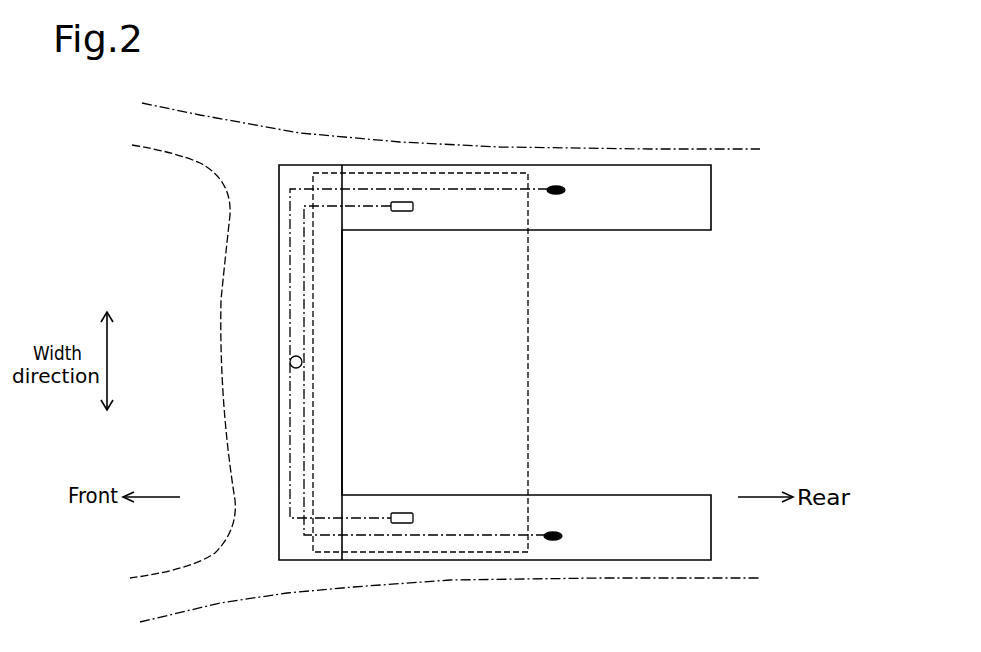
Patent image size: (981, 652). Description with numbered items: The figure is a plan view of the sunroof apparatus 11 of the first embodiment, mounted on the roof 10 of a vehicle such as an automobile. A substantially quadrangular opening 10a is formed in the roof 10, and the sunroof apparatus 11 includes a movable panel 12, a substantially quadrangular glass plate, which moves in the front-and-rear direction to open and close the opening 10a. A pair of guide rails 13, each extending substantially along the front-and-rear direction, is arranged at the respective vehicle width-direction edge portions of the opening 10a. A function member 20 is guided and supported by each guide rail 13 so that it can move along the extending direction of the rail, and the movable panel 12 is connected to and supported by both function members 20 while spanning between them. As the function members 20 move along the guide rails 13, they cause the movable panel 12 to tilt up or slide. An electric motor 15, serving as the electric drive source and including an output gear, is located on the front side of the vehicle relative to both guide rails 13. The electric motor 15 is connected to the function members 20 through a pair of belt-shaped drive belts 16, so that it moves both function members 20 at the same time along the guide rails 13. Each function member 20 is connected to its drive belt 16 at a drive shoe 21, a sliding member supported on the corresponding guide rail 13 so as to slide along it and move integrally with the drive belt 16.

The roof 10 is at (521, 578).
The opening 10a is at (465, 384).
The sunroof apparatus 11 is at (628, 145).
The movable panel 12 is at (529, 362).
The guide rail 13 is at (481, 165).
The electric motor 15 is at (291, 370).
The drive belt 16 is at (289, 436).
The function member 20 is at (429, 362).
The drive shoe 21 is at (401, 212).